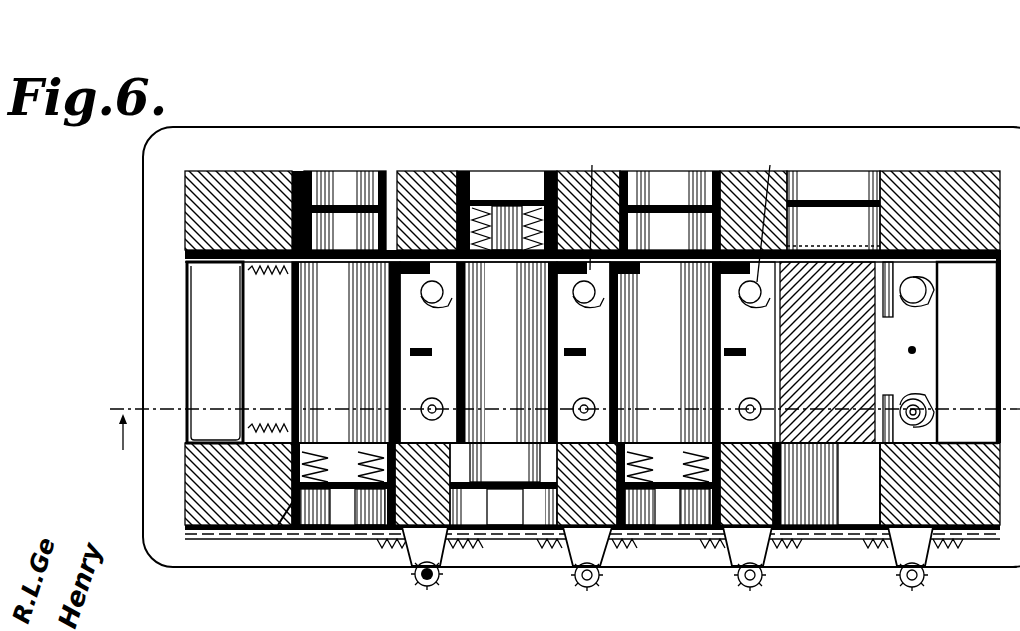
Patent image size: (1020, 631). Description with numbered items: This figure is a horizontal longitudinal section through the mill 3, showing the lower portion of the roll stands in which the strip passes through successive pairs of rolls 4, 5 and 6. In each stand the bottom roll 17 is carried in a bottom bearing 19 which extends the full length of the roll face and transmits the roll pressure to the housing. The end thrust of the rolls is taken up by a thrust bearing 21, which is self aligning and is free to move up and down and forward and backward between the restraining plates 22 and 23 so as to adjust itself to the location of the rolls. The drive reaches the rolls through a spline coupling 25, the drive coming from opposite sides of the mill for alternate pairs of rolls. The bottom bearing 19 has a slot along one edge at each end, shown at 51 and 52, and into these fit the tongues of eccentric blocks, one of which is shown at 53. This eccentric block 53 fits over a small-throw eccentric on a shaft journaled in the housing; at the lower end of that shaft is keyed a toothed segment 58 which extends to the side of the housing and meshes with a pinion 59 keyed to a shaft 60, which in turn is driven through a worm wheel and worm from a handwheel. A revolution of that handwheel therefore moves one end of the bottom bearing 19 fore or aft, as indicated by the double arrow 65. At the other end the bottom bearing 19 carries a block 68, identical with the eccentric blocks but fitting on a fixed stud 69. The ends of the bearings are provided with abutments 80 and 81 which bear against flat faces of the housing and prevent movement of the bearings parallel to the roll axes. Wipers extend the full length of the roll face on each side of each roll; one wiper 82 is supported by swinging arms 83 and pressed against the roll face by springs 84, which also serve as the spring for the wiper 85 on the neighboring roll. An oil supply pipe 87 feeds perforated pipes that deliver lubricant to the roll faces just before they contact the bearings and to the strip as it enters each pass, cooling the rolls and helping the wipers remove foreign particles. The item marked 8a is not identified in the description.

The mill 3 is at (953, 166).
The pair of rolls 4 is at (297, 363).
The pair of rolls 5 is at (492, 371).
The pair of rolls 6 is at (650, 367).
The spring seat 8a is at (597, 207).
The bottom roll 17 is at (297, 325).
The bottom bearing 19 is at (908, 350).
The thrust bearing 21 is at (528, 192).
The restraining plate 22 is at (392, 412).
The restraining plate 23 is at (448, 185).
The spline coupling 25 is at (343, 185).
The slot 51 is at (405, 400).
The slot 52 is at (886, 302).
The eccentric block 53 is at (432, 397).
The toothed segment 58 is at (398, 553).
The pinion 59 is at (441, 578).
The shaft 60 is at (425, 588).
The double arrow 65 is at (876, 377).
The block 68 is at (950, 288).
The fixed stud 69 is at (441, 291).
The abutment 80 is at (868, 452).
The abutment 81 is at (835, 246).
The wiper 82 is at (388, 336).
The swinging arm 83 is at (440, 304).
The spring 84 is at (774, 213).
The wiper 85 is at (540, 393).
The oil supply pipe 87 is at (392, 366).